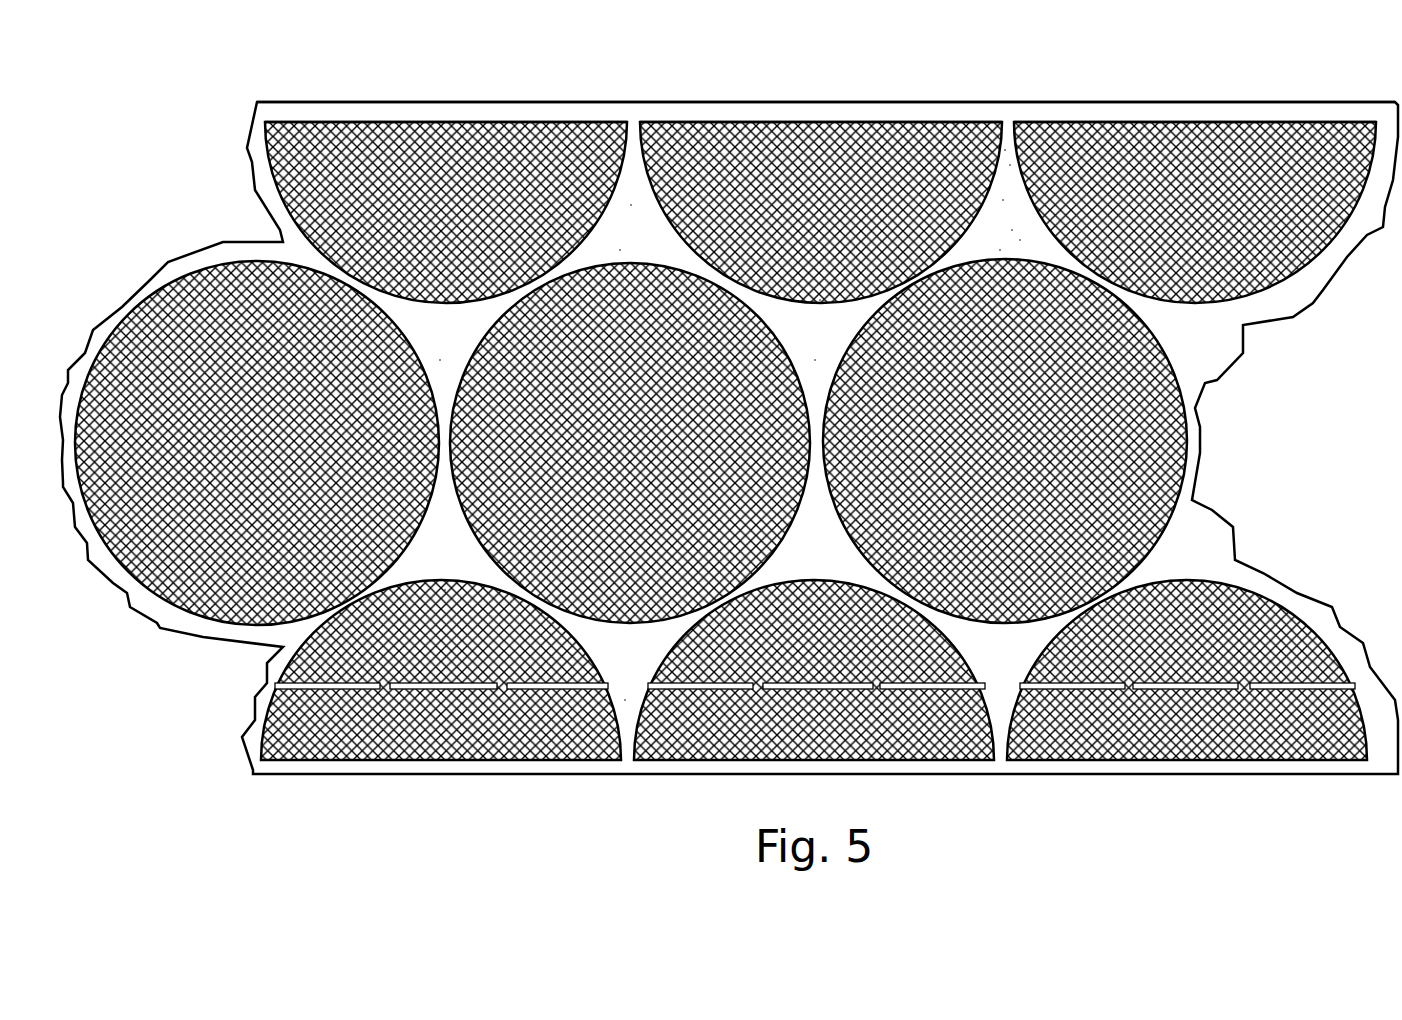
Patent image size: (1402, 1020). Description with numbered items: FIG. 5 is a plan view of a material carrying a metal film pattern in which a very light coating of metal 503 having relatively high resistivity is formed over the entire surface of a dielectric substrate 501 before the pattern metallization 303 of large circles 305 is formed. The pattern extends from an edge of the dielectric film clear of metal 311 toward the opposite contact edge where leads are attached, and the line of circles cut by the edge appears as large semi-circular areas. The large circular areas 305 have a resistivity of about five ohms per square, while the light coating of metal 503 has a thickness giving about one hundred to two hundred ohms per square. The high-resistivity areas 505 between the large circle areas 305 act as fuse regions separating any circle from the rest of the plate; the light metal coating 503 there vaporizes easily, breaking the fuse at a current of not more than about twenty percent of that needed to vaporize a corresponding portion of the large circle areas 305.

The dielectric substrate 501 is at (1169, 101).
The edge of the dielectric film clear of metal 311 is at (419, 118).
The pattern metallization 303 is at (825, 152).
The large circular areas 305 is at (287, 466).
The light coating of metal 503 is at (1011, 180).
The high-resistivity areas 505 is at (651, 240).